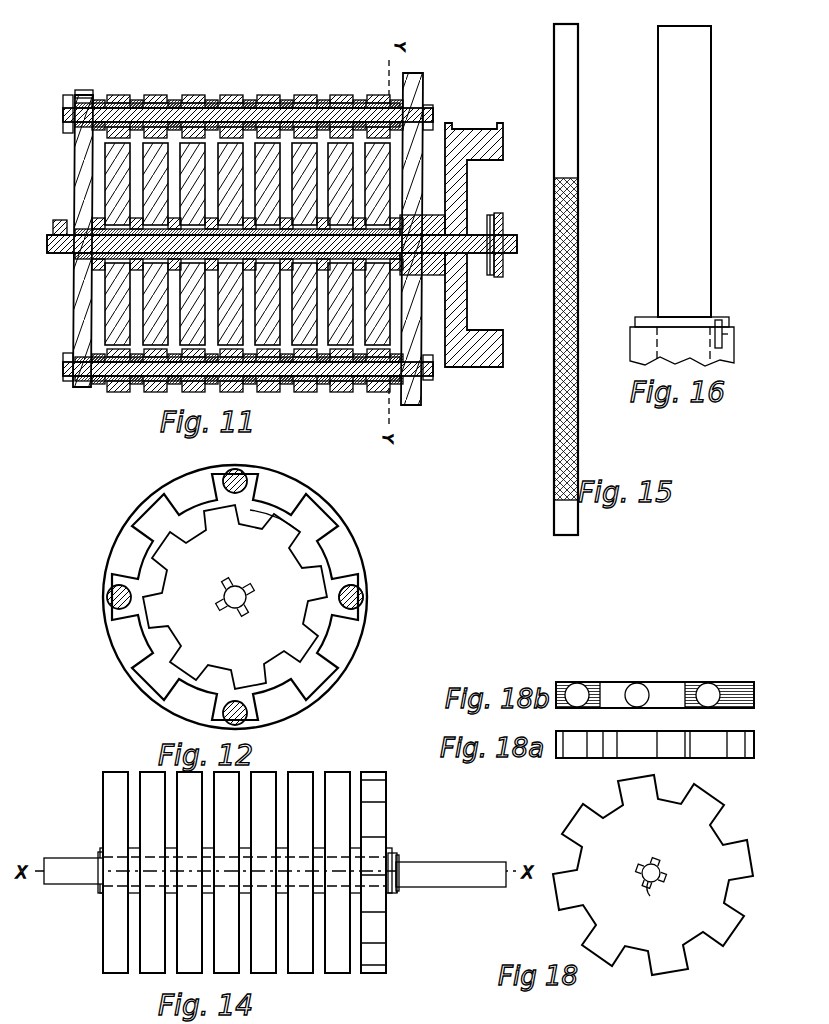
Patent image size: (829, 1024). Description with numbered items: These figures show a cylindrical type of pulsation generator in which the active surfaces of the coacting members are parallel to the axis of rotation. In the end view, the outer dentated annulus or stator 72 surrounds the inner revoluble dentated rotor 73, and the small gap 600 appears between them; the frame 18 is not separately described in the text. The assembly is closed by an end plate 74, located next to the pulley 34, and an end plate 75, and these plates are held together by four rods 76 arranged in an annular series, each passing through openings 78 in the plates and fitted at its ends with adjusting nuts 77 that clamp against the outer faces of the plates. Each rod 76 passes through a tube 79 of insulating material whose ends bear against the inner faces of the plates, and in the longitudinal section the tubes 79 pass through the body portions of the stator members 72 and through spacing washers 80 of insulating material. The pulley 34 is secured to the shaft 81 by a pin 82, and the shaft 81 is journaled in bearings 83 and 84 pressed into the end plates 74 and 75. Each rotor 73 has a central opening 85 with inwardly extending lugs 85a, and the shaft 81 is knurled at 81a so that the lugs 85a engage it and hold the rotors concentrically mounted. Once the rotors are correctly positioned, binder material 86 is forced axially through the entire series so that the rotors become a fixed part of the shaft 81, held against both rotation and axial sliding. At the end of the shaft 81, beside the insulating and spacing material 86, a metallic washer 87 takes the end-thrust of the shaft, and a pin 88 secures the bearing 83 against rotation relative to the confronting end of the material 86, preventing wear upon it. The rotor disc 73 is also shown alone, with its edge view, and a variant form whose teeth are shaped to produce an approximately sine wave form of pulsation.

In FIG. 11, the frame 18 is at (78, 380).
In FIG. 11, the pulley 34 is at (470, 130).
In FIG. 11, the outer dentated annulus 72 is at (300, 97).
In FIG. 12, the outer dentated annulus 72 is at (352, 563).
In FIG. 11, the inner revoluble dentated rotor 73 is at (152, 176).
In FIG. 12, the inner revoluble dentated rotor 73 is at (268, 562).
In FIG. 18, the inner revoluble dentated rotor 73 is at (653, 875).
In FIG. 11, the end plate 74 is at (420, 96).
In FIG. 11, the end plate 75 is at (78, 302).
In FIG. 11, the rod 76 is at (64, 366).
In FIG. 12, the rod 76 is at (364, 598).
In FIG. 11, the adjusting nut 77 is at (68, 97).
In FIG. 11, the opening 78 is at (84, 100).
In FIG. 11, the tube 79 is at (110, 390).
In FIG. 12, the tube 79 is at (247, 478).
In FIG. 11, the spacing washer 80 is at (222, 97).
In FIG. 11, the shaft 81 is at (48, 244).
In FIG. 12, the shaft 81 is at (230, 600).
In FIG. 15, the shaft 81 is at (574, 116).
In FIG. 16, the shaft 81 is at (706, 193).
In FIG. 15, the knurled portion 81a is at (574, 420).
In FIG. 11, the pin 82 is at (490, 215).
In FIG. 11, the bearing 83 is at (440, 275).
In FIG. 11, the bearing 84 is at (60, 220).
In FIG. 18, the central opening 85 is at (658, 868).
In FIG. 18, the inwardly extending lug 85a is at (651, 896).
In FIG. 11, the binder material 86 is at (400, 223).
In FIG. 14, the binder material 86 is at (100, 852).
In FIG. 16, the binder material 86 is at (630, 340).
In FIG. 14, the metallic washer 87 is at (399, 856).
In FIG. 16, the metallic washer 87 is at (720, 318).
In FIG. 14, the pin 88 is at (396, 892).
In FIG. 16, the pin 88 is at (728, 337).
In FIG. 12, the clearance gap 600 is at (298, 515).